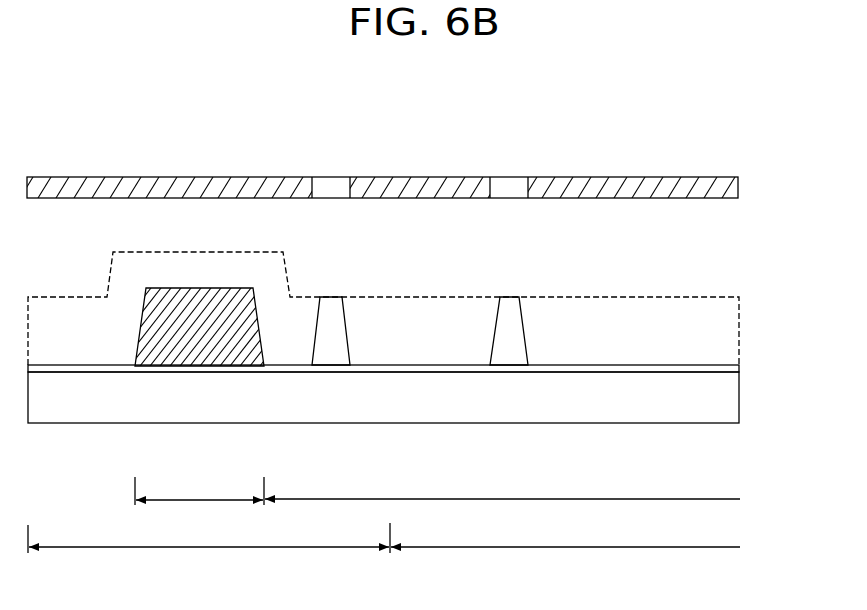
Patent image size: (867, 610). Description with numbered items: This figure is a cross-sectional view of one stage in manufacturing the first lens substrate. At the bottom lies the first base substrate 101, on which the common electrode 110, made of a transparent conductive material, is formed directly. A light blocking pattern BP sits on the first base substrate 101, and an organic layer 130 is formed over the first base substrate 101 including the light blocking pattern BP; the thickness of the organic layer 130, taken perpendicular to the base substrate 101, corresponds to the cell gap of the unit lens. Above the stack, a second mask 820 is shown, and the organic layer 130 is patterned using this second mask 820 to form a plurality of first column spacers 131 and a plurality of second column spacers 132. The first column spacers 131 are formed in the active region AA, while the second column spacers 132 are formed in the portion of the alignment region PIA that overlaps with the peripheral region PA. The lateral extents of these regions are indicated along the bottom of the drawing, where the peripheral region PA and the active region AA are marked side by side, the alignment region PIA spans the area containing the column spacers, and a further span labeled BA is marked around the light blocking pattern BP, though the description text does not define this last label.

The second mask 820 is at (738, 184).
The organic layer 130 is at (739, 325).
The common electrode 110 is at (739, 368).
The first base substrate 101 is at (739, 400).
The light blocking pattern BP is at (183, 366).
The second column spacers 132 is at (331, 304).
The first column spacers 131 is at (509, 304).
The bank area BA is at (199, 502).
The alignment region PIA is at (502, 511).
The peripheral region PA is at (209, 551).
The active region AA is at (565, 563).